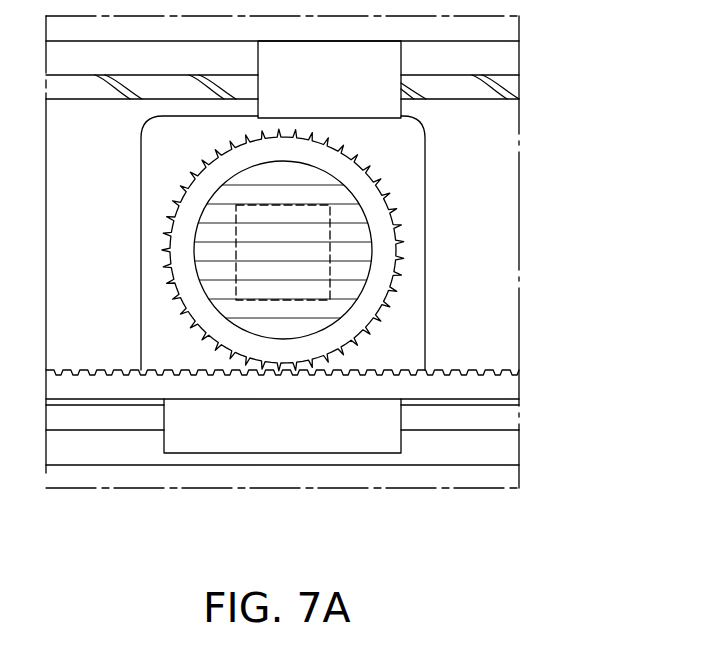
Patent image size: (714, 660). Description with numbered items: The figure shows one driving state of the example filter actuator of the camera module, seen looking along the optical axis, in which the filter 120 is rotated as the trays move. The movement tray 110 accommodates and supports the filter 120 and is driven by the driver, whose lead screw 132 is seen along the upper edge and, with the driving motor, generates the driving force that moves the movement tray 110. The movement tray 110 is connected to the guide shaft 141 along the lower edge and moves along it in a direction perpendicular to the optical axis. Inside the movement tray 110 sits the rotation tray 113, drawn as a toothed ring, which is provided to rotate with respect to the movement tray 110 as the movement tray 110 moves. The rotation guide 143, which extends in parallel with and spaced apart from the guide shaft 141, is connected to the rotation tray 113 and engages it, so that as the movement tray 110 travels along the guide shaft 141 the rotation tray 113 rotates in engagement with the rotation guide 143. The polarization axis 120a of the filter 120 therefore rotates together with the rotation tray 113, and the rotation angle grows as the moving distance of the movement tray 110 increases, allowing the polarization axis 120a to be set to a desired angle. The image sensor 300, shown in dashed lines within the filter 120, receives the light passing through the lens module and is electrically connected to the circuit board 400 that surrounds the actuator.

The lead screw 132 is at (505, 86).
The circuit board 400 is at (505, 164).
The rotation tray 113 is at (385, 253).
The movement tray 110 is at (398, 338).
The rotation guide 143 is at (505, 389).
The guide shaft 141 is at (505, 422).
The filter 120 is at (257, 327).
The image sensor 300 is at (284, 300).
The polarization axis 120a is at (323, 317).